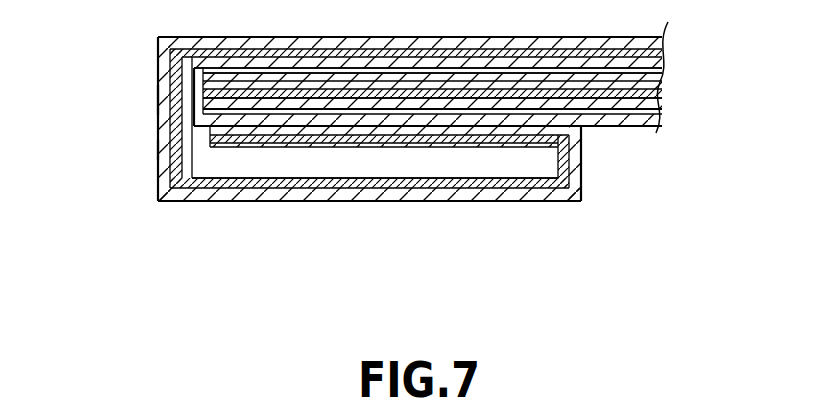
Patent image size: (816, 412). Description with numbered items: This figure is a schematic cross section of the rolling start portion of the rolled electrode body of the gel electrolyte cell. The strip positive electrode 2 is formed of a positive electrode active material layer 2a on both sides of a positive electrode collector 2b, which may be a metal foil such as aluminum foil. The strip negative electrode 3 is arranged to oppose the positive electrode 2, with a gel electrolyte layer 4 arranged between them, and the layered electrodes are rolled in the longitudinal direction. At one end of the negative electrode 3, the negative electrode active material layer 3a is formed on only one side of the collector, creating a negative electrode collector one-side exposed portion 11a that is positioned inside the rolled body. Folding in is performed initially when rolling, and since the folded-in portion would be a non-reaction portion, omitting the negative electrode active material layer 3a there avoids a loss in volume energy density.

The negative electrode 3 is at (673, 35).
The negative electrode active material layer 3a is at (167, 153).
The gel electrolyte layer 4 is at (658, 72).
The positive electrode 2 is at (452, 145).
The positive electrode active material layer 2a is at (633, 110).
The positive electrode collector 2b is at (614, 88).
The negative electrode collector one-side exposed portion 11a is at (354, 163).